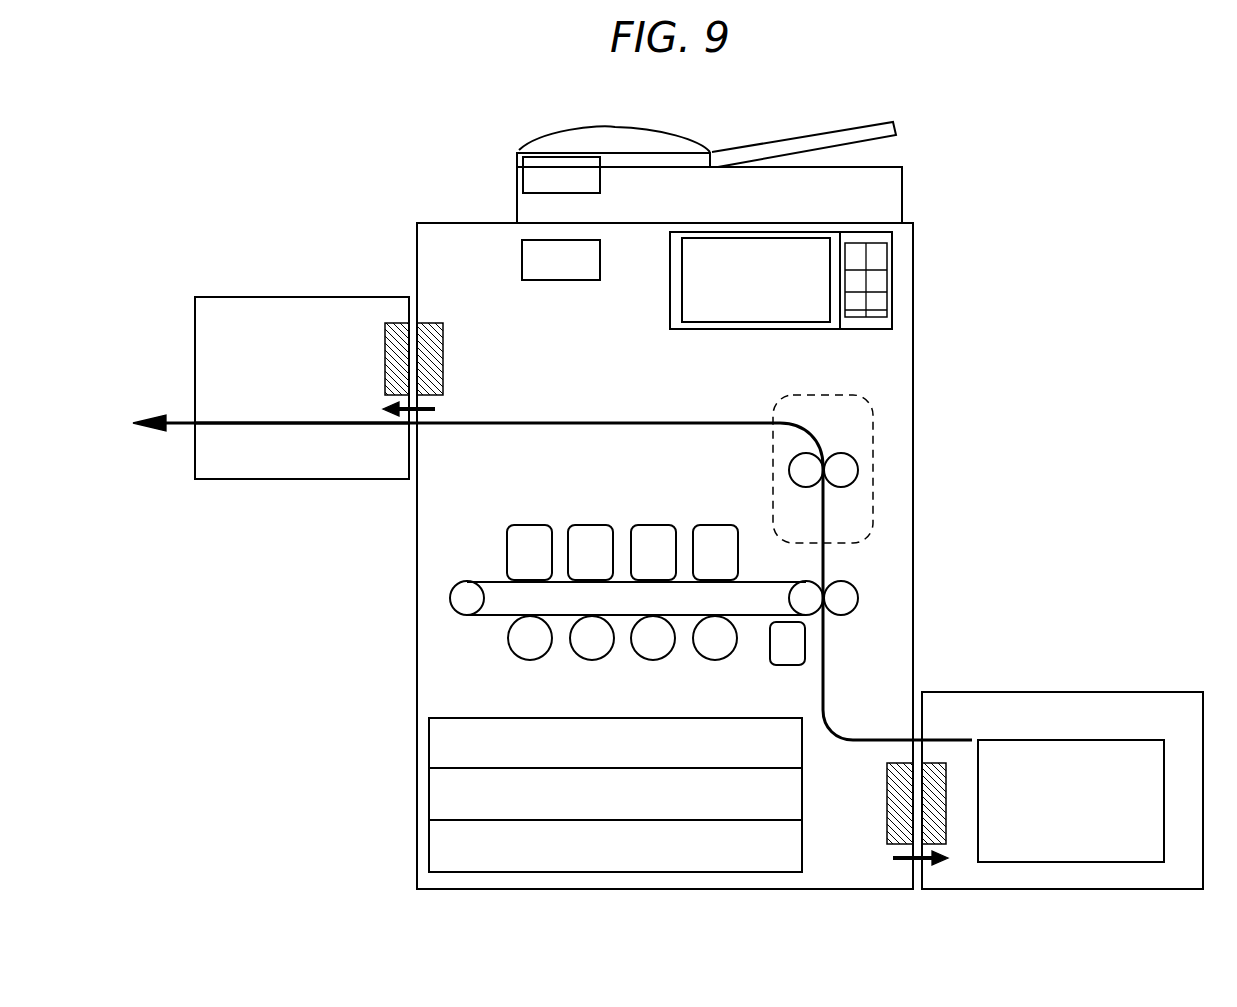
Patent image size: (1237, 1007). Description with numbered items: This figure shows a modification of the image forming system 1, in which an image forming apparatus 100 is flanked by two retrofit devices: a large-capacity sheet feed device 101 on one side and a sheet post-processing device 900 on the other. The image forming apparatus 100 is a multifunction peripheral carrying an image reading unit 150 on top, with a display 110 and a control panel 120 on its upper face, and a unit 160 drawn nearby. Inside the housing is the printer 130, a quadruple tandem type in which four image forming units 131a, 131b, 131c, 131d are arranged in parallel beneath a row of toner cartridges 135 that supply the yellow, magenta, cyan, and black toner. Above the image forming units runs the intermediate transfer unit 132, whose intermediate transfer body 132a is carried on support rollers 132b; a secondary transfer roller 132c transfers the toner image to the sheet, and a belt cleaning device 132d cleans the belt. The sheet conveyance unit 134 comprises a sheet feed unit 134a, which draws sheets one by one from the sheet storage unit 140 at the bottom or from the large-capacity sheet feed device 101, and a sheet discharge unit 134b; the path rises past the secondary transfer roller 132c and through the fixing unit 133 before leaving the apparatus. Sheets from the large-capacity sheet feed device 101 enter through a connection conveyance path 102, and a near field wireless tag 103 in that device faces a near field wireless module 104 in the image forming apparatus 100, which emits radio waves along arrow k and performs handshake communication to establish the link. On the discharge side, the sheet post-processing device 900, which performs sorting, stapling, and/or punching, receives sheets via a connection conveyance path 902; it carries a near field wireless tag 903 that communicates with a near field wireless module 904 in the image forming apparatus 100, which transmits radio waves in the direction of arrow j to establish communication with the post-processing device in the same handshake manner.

The image forming system 1 is at (1007, 113).
The image forming apparatus 100 is at (445, 222).
The large-capacity sheet feed device 101 is at (1133, 691).
The connection conveyance path 102 is at (950, 740).
The near field wireless tag 103 is at (946, 846).
The near field wireless module 104 is at (887, 846).
The display 110 is at (802, 308).
The control panel 120 is at (880, 258).
The printer 130 is at (456, 557).
The image forming unit 131a is at (532, 660).
The image forming unit 131b is at (594, 660).
The image forming unit 131c is at (655, 660).
The image forming unit 131d is at (717, 660).
The intermediate transfer unit 132 is at (459, 619).
The intermediate transfer body 132a is at (500, 618).
The support rollers 132b is at (455, 598).
The secondary transfer roller 132c is at (850, 610).
The belt cleaning device 132d is at (788, 666).
The fixing unit 133 is at (873, 440).
The sheet conveyance unit 134 is at (823, 566).
The sheet feed unit 134a is at (858, 692).
The sheet discharge unit 134b is at (457, 426).
The toner cartridge 135 is at (530, 525).
The sheet storage unit 140 is at (445, 790).
The image reading unit 150 is at (873, 195).
The control unit 160 is at (522, 262).
The sheet post-processing device 900 is at (240, 297).
The connection conveyance path 902 is at (405, 425).
The near field wireless tag 903 is at (385, 333).
The near field wireless module 904 is at (443, 352).